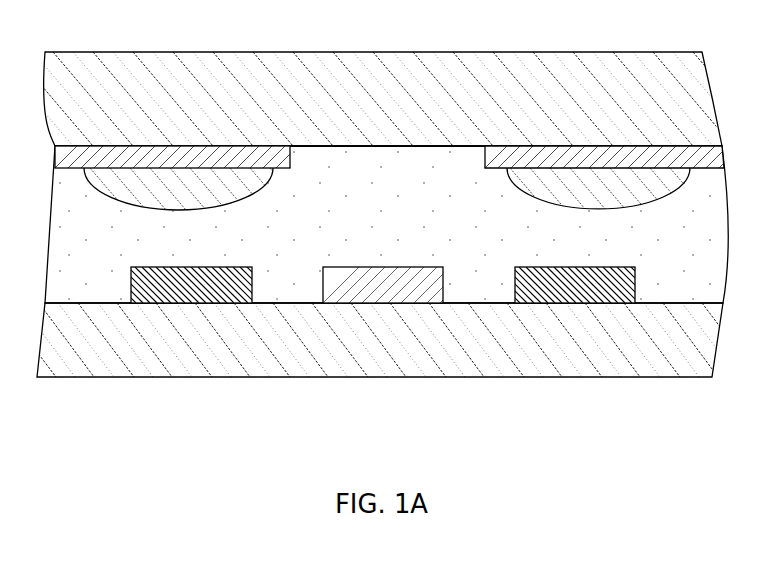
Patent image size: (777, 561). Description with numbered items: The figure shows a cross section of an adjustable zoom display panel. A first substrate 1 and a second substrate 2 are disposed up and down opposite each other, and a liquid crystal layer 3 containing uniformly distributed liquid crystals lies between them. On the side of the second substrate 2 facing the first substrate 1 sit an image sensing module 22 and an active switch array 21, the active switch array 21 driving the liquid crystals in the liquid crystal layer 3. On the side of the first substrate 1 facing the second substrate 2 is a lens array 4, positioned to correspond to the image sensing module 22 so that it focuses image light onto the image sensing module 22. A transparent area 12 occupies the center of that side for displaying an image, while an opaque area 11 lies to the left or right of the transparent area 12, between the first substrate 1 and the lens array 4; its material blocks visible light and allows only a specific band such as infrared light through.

The first substrate 1 is at (703, 128).
The second substrate 2 is at (700, 340).
The liquid crystal layer 3 is at (710, 253).
The lens array 4 is at (668, 183).
The opaque area 11 is at (55, 157).
The transparent area 12 is at (417, 146).
The active switch array 21 is at (385, 303).
The image sensing module 22 is at (190, 303).